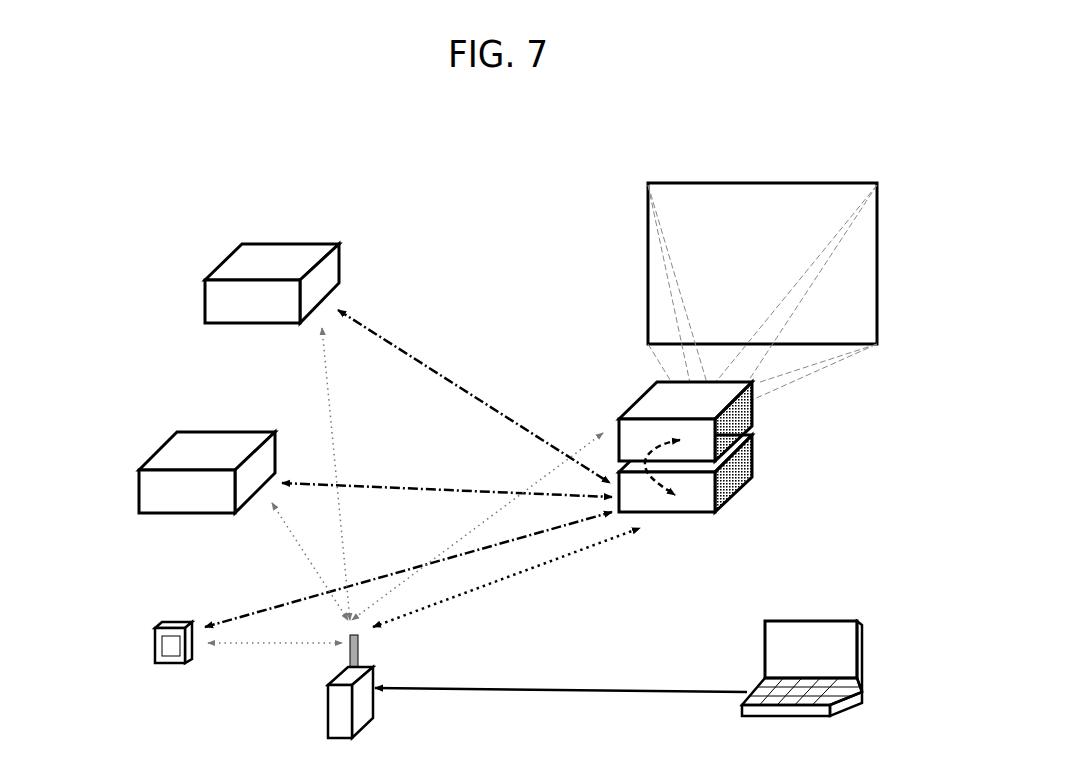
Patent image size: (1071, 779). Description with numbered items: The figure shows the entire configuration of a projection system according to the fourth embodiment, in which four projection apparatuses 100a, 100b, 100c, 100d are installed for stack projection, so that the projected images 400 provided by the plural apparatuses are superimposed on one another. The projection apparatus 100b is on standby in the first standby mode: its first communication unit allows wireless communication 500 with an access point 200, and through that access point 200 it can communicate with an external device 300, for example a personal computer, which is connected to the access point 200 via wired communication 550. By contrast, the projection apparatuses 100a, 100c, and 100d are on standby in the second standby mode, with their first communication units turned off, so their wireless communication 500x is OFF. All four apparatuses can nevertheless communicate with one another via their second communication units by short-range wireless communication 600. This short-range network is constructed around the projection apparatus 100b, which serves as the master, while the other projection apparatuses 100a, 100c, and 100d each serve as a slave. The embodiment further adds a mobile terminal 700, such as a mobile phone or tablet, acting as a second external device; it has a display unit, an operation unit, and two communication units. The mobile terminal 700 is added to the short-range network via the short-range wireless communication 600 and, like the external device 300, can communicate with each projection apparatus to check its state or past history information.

The projected images 400 is at (737, 180).
The projection apparatus 100a is at (763, 427).
The projection apparatus 100b is at (755, 483).
The projection apparatus 100c is at (238, 332).
The projection apparatus 100d is at (172, 522).
The short-range wireless communication 600 is at (258, 603).
The wireless communication 500 is at (585, 563).
The wireless communication 500x is at (458, 540).
The wired communication 550 is at (595, 683).
The access point 200 is at (375, 728).
The external device 300 is at (812, 607).
The mobile terminal 700 is at (165, 673).